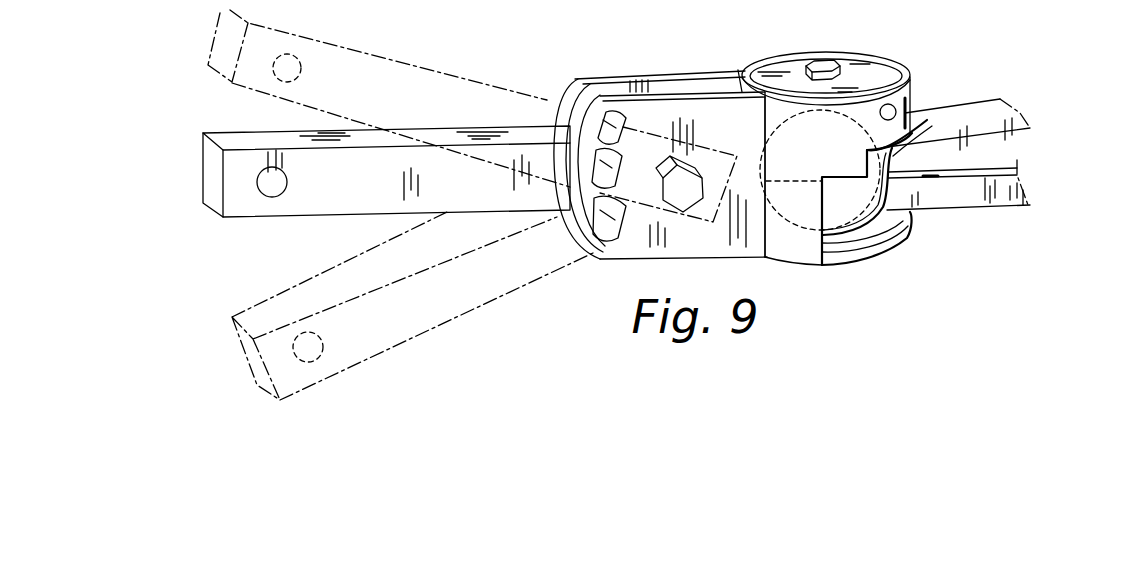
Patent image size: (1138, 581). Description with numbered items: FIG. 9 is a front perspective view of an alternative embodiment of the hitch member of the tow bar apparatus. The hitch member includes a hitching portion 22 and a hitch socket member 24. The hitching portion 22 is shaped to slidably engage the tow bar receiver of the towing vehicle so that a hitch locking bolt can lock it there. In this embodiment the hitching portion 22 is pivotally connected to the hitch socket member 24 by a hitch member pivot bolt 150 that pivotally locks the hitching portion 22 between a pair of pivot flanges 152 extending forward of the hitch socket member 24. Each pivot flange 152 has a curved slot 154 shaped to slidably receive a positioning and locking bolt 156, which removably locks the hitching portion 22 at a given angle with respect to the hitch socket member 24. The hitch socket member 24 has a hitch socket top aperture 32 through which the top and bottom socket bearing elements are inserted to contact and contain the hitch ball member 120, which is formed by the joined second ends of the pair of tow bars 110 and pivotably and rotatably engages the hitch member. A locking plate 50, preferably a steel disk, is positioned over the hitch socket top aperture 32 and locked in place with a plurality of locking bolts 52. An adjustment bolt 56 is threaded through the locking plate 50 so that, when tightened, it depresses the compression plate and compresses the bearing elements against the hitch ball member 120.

The hitching portion 22 is at (305, 205).
The hitch socket member 24 is at (903, 100).
The hitch socket top aperture 32 is at (788, 50).
The locking plate 50 is at (892, 62).
The locking bolts 52 is at (732, 76).
The adjustment bolt 56 is at (826, 62).
The tow bars 110 is at (1027, 123).
The hitch ball member 120 is at (890, 150).
The hitch member pivot bolt 150 is at (693, 172).
The pivot flanges 152 is at (627, 77).
The curved slot 154 is at (585, 120).
The positioning and locking bolt 156 is at (573, 245).